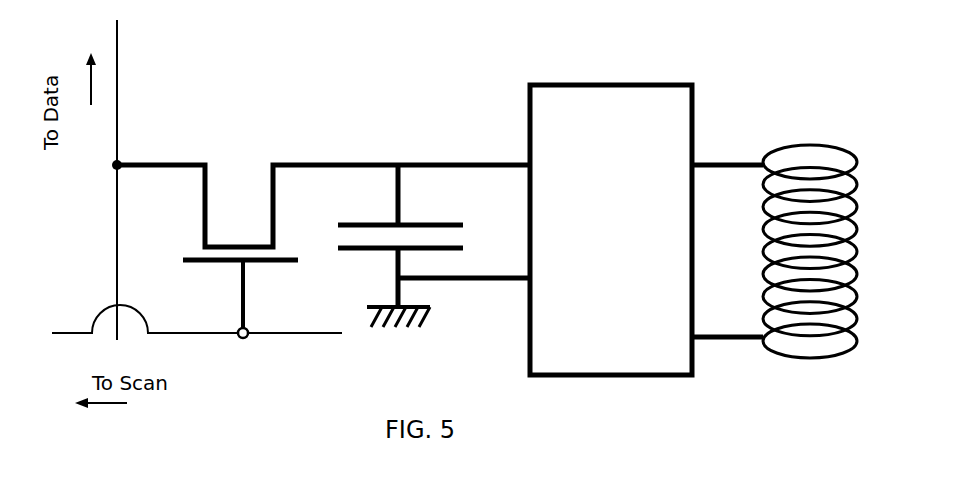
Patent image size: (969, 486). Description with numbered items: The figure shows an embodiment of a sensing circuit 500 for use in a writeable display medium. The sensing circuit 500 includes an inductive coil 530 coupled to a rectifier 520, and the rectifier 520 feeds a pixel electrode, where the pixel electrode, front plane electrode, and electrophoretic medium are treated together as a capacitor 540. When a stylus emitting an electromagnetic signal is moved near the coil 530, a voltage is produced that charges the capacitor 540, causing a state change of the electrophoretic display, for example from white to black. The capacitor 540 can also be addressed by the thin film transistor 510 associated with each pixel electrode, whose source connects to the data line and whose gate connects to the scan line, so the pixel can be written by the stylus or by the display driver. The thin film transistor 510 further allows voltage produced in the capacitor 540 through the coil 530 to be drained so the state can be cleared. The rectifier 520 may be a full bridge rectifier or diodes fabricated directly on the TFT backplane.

The sensing circuit 500 is at (397, 66).
The thin film transistor 510 is at (248, 262).
The rectifier 520 is at (591, 331).
The inductive coil 530 is at (803, 330).
The capacitor 540 is at (432, 250).